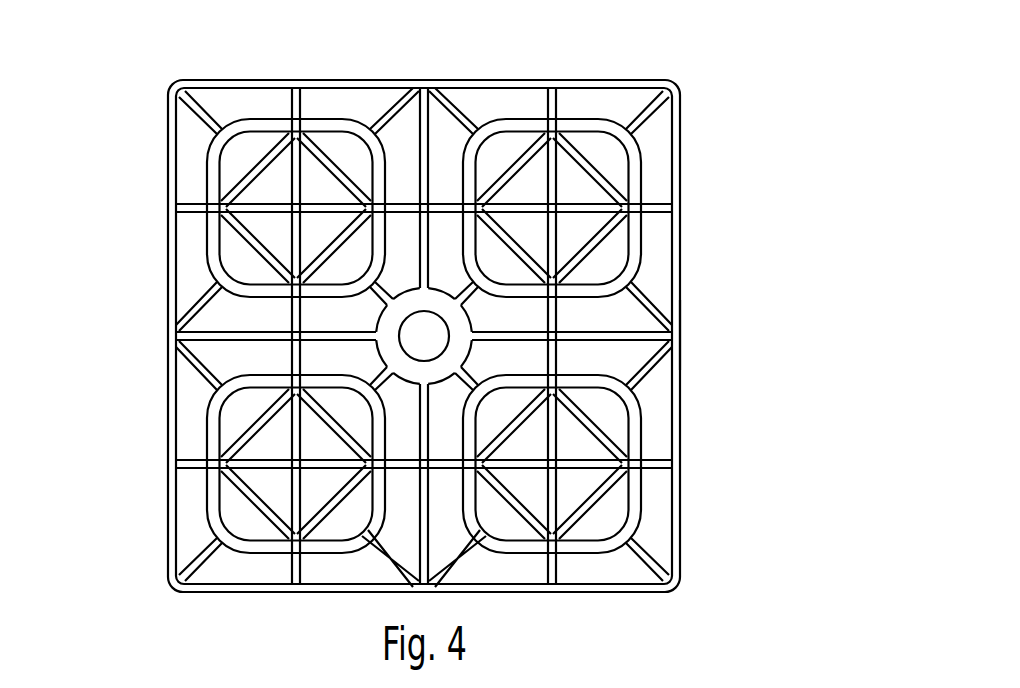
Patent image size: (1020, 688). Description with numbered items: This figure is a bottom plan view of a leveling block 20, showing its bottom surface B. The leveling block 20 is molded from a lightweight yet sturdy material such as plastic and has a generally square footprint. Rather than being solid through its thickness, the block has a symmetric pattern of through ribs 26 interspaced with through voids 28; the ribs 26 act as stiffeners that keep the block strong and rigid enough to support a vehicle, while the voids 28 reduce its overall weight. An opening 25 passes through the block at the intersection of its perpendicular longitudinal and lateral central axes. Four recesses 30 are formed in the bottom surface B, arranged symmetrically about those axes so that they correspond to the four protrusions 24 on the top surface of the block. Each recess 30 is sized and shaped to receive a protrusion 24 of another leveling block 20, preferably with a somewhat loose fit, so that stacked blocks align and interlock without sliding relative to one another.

The leveling block 20 is at (65, 80).
The protrusion 24 is at (222, 178).
The opening 25 is at (425, 334).
The through ribs 26 is at (388, 565).
The through voids 28 is at (205, 577).
The recess 30 is at (247, 521).
The bottom surface B is at (682, 331).